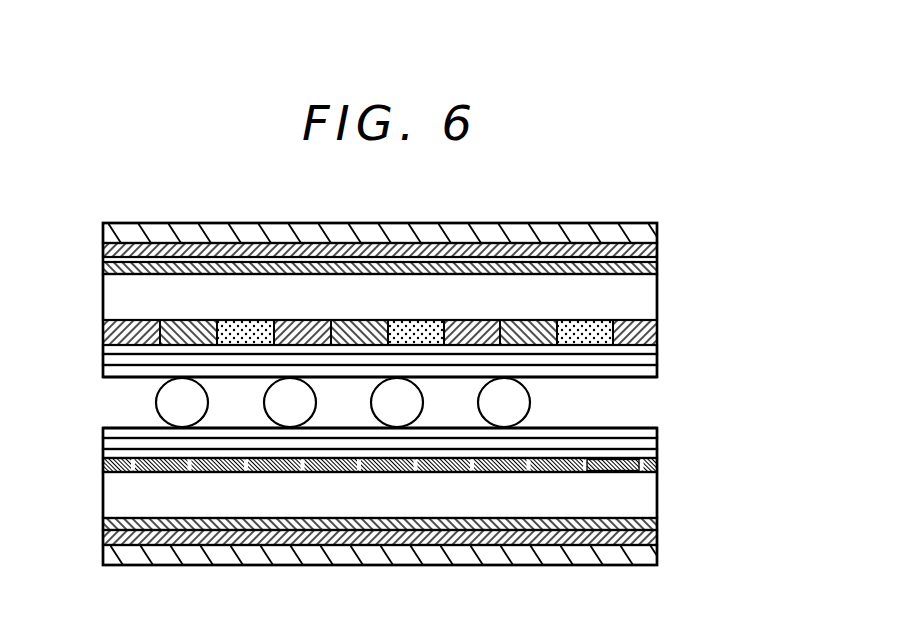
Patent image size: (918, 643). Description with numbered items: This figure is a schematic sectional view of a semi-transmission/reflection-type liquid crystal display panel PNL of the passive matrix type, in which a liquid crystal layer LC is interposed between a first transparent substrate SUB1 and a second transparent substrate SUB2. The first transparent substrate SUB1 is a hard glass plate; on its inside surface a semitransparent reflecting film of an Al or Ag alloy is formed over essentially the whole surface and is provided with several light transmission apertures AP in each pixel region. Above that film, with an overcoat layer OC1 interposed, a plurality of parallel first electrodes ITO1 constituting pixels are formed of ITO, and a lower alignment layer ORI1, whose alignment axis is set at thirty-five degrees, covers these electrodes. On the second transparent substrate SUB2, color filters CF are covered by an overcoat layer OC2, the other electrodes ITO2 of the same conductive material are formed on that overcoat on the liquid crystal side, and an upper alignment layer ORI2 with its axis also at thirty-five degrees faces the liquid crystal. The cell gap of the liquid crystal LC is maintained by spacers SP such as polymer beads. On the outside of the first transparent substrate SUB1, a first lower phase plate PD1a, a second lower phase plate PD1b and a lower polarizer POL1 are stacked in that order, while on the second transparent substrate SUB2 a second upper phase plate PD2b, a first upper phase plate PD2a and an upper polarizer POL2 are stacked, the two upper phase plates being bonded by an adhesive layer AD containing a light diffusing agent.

The liquid crystal display panel PNL is at (181, 196).
The upper polarizer POL2 is at (657, 230).
The second upper phase plate PD2b is at (657, 248).
The adhesive layer AD is at (657, 258).
The first upper phase plate PD2a is at (657, 267).
The second transparent substrate SUB2 is at (380, 297).
The color filters CF is at (636, 321).
The overcoat layer OC2 is at (657, 347).
The other electrodes ITO2 is at (657, 360).
The upper alignment layer ORI2 is at (657, 373).
The spacers SP is at (156, 402).
The liquid crystal layer LC is at (600, 409).
The lower alignment layer ORI1 is at (657, 433).
The first electrodes ITO1 is at (657, 443).
The overcoat layer OC1 is at (657, 455).
The first transparent substrate SUB1 is at (380, 495).
The first lower phase plate PD1a is at (657, 523).
The second lower phase plate PD1b is at (657, 537).
The lower polarizer POL1 is at (657, 557).
The light transmission apertures AP is at (640, 472).